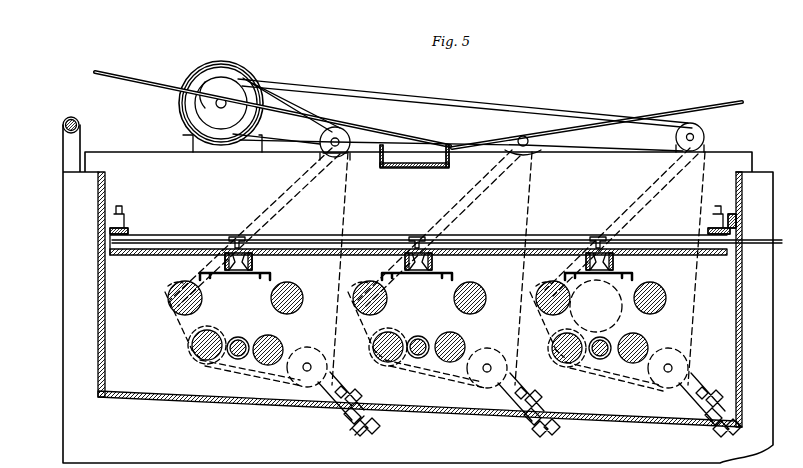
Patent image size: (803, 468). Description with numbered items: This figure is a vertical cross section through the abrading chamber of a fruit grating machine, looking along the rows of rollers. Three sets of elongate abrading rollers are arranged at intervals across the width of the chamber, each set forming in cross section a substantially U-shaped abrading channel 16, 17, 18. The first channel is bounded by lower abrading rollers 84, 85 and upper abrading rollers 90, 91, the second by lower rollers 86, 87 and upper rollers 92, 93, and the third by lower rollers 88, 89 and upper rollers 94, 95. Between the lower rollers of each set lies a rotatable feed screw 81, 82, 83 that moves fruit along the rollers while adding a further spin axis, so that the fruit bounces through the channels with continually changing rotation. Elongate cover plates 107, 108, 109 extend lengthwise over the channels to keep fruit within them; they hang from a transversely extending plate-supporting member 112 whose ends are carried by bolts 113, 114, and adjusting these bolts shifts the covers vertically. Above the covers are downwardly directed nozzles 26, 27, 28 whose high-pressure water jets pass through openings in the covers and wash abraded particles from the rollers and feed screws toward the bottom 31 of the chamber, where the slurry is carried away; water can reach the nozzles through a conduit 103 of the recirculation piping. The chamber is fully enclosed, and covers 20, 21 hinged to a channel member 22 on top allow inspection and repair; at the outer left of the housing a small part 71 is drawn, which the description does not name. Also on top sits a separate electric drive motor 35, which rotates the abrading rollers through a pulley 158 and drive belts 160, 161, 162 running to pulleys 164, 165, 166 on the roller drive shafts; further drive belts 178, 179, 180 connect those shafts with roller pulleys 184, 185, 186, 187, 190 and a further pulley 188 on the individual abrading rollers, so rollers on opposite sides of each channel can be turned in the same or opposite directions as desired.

The abrading channel 16 is at (233, 339).
The abrading channel 17 is at (416, 340).
The abrading channel 18 is at (596, 335).
The cover 20 is at (138, 75).
The cover 21 is at (686, 106).
The channel member 22 is at (408, 168).
The nozzle 26 is at (250, 266).
The nozzle 27 is at (433, 266).
The nozzle 28 is at (614, 266).
The bottom of the abrading chamber 31 is at (197, 398).
The electric drive motor 35 is at (238, 66).
The guide roller 71 is at (63, 125).
The feed screw 81 is at (238, 356).
The feed screw 82 is at (418, 356).
The feed screw 83 is at (604, 360).
The lower abrading roller 84 is at (205, 350).
The lower abrading roller 85 is at (266, 364).
The lower abrading roller 86 is at (387, 352).
The lower abrading roller 87 is at (450, 362).
The lower abrading roller 88 is at (568, 364).
The lower abrading roller 89 is at (645, 340).
The upper abrading roller 90 is at (172, 306).
The upper abrading roller 91 is at (296, 290).
The upper abrading roller 92 is at (358, 308).
The upper abrading roller 93 is at (480, 292).
The upper abrading roller 94 is at (545, 310).
The upper abrading roller 95 is at (660, 292).
The conduit 103 is at (548, 238).
The cover plate 107 is at (224, 279).
The cover plate 108 is at (404, 279).
The cover plate 109 is at (610, 279).
The plate-supporting member 112 is at (157, 237).
The bolt 113 is at (124, 216).
The bolt 114 is at (718, 206).
The pulley 158 is at (212, 80).
The drive belt 160 is at (288, 97).
The drive belt 161 is at (400, 111).
The drive belt 162 is at (553, 111).
The pulley 164 is at (340, 131).
The pulley 165 is at (523, 135).
The pulley 166 is at (706, 134).
The drive belt 178 is at (345, 203).
The drive belt 179 is at (535, 190).
The drive belt 180 is at (628, 193).
The roller pulley 184 is at (170, 290).
The roller pulley 185 is at (188, 349).
The roller pulley 186 is at (386, 300).
The roller pulley 187 is at (372, 350).
The arm 188 is at (556, 282).
The roller pulley 190 is at (554, 351).